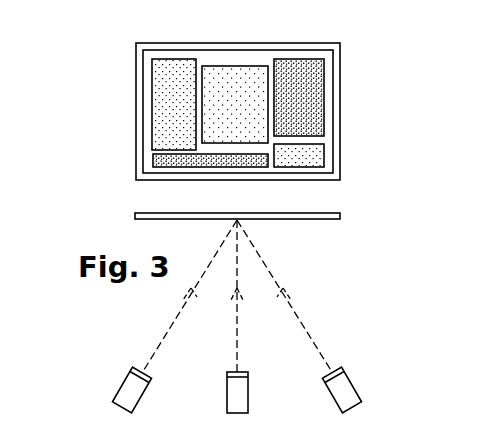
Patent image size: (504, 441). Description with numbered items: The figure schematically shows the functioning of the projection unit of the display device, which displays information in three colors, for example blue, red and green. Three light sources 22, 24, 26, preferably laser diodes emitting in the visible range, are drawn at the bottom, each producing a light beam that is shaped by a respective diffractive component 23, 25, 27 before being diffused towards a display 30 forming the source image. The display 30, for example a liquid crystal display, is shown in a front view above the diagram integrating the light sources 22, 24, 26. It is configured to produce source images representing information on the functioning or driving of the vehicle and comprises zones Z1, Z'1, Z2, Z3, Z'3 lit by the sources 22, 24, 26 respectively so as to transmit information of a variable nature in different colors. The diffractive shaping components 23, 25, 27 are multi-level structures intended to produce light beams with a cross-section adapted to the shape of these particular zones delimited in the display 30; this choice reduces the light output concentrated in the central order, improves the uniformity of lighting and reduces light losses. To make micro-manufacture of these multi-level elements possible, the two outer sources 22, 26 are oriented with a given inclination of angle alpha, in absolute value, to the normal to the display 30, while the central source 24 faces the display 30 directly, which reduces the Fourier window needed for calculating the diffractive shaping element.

The display 30 is at (344, 213).
The zone Z1 is at (172, 167).
The zone Z2 is at (241, 76).
The zone Z3 is at (162, 130).
The zone Z'1 is at (333, 97).
The zone Z'3 is at (333, 153).
The light source 22 is at (120, 387).
The diffractive shaping component 23 is at (138, 364).
The light source 24 is at (226, 390).
The diffractive shaping component 25 is at (229, 369).
The light source 26 is at (361, 383).
The diffractive shaping component 27 is at (336, 365).